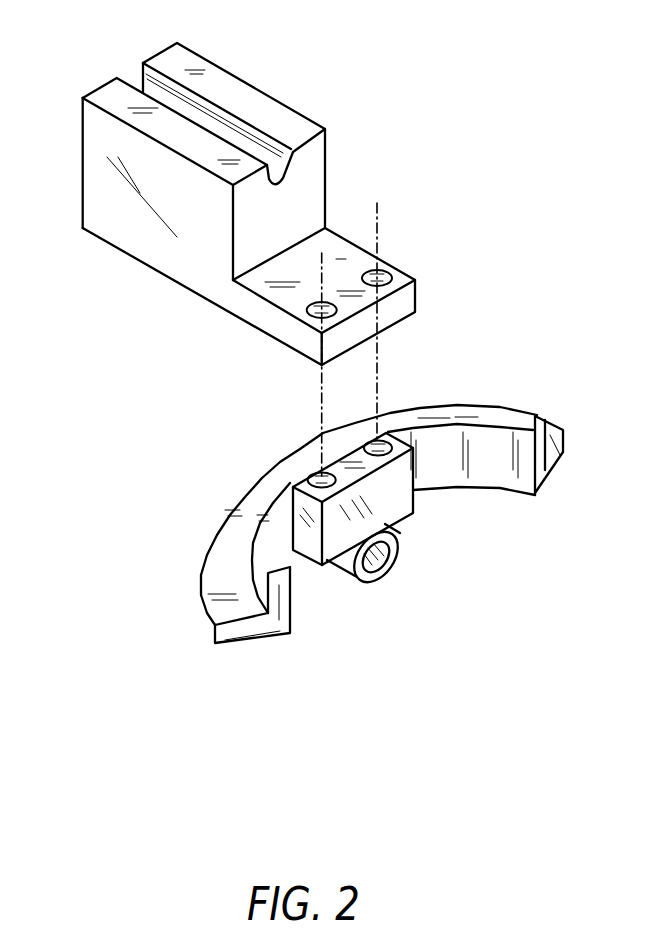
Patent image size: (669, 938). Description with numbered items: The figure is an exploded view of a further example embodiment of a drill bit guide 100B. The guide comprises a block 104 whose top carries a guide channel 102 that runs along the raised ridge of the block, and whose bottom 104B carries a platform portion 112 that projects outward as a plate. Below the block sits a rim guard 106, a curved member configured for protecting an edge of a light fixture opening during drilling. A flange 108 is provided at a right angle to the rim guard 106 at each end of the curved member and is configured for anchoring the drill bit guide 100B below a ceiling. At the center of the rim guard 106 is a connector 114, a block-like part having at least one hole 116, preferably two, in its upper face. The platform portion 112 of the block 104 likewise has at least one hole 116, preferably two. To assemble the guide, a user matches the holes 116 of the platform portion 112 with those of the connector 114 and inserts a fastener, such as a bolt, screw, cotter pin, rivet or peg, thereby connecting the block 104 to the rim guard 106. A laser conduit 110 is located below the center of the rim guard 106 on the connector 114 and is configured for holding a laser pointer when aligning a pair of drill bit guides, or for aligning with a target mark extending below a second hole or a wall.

The drill bit guide 100B is at (333, 85).
The guide channel 102 is at (150, 72).
The block 104 is at (100, 180).
The bottom 104B is at (180, 287).
The rim guard 106 is at (513, 417).
The flange 108 is at (563, 442).
The laser conduit 110 is at (396, 560).
The platform portion 112 is at (346, 237).
The connector 114 is at (337, 540).
The hole 116 is at (386, 274).